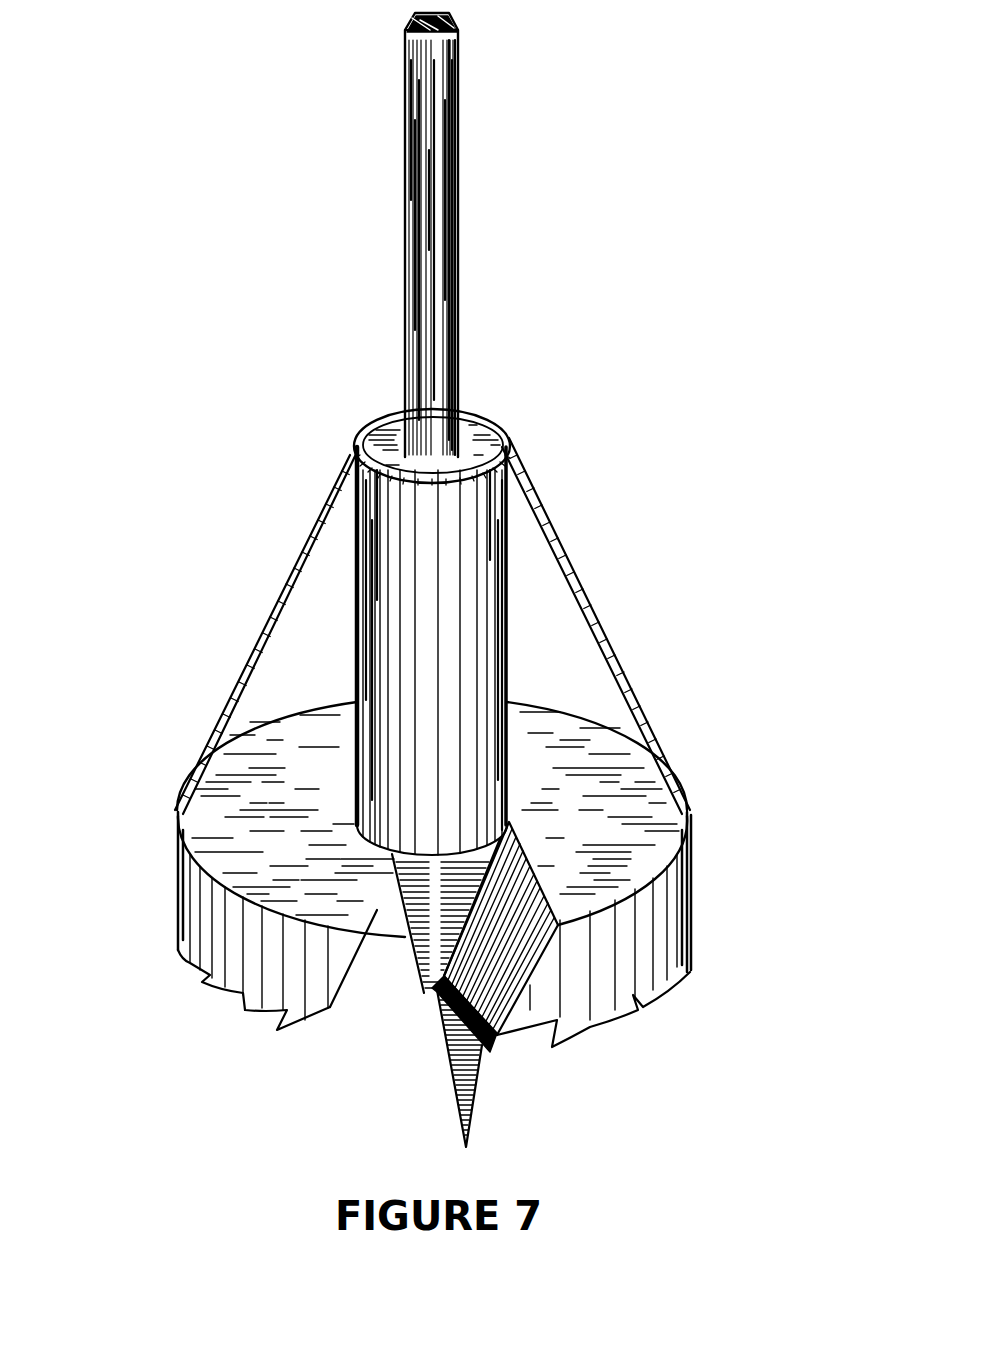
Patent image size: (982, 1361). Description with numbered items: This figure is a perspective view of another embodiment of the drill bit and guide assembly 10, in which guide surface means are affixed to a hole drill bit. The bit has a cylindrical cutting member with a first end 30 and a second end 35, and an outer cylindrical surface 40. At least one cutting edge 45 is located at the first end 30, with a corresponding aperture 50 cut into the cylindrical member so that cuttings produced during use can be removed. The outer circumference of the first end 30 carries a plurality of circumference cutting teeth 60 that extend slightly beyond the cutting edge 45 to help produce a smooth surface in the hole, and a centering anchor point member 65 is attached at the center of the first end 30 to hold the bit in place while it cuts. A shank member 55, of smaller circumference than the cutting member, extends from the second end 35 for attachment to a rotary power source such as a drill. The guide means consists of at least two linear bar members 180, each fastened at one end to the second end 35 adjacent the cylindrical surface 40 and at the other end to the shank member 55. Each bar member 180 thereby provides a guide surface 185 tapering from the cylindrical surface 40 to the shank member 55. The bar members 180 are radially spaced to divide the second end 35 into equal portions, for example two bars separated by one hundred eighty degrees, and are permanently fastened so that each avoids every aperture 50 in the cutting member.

The drill bit and guide assembly 10 is at (780, 358).
The first end 30 is at (420, 929).
The second end 35 is at (213, 820).
The cylindrical surface 40 is at (230, 937).
The cutting edge 45 is at (451, 1026).
The aperture 50 is at (375, 956).
The shank member 55 is at (457, 220).
The circumference cutting teeth 60 is at (223, 993).
The centering anchor point member 65 is at (470, 1076).
The linear bar member 180 is at (227, 713).
The guide surface 185 is at (303, 542).